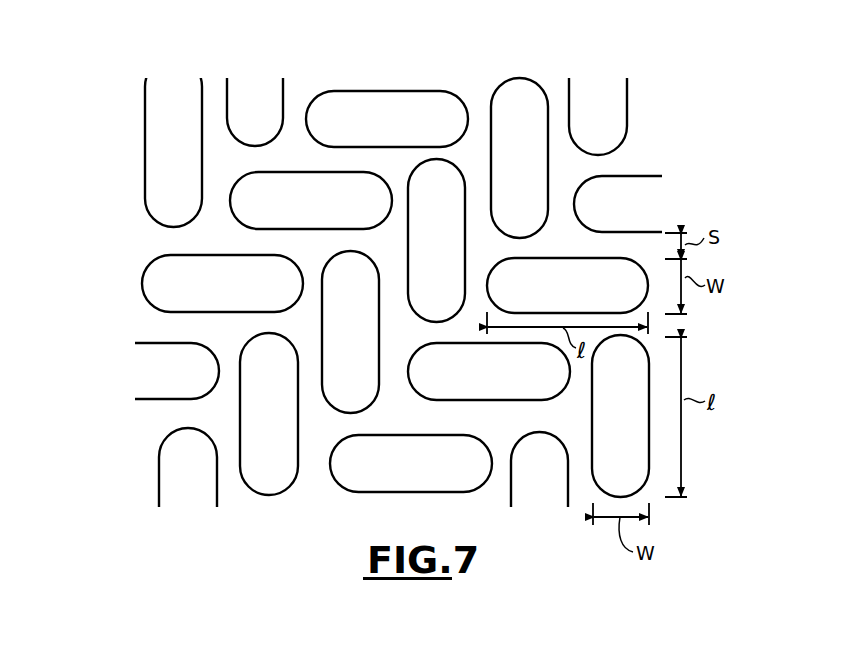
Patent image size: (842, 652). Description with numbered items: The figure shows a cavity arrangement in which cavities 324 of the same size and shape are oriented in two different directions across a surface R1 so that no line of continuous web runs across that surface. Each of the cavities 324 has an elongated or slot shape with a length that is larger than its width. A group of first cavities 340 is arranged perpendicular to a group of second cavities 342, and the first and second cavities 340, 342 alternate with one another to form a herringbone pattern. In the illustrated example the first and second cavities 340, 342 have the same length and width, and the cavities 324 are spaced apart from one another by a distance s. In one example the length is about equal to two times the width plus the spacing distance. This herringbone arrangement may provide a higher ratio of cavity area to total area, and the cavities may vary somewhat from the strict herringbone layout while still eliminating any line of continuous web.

The surface R1 is at (103, 70).
The cavities 324 is at (340, 100).
The first cavities 340 is at (373, 103).
The second cavities 342 is at (517, 95).